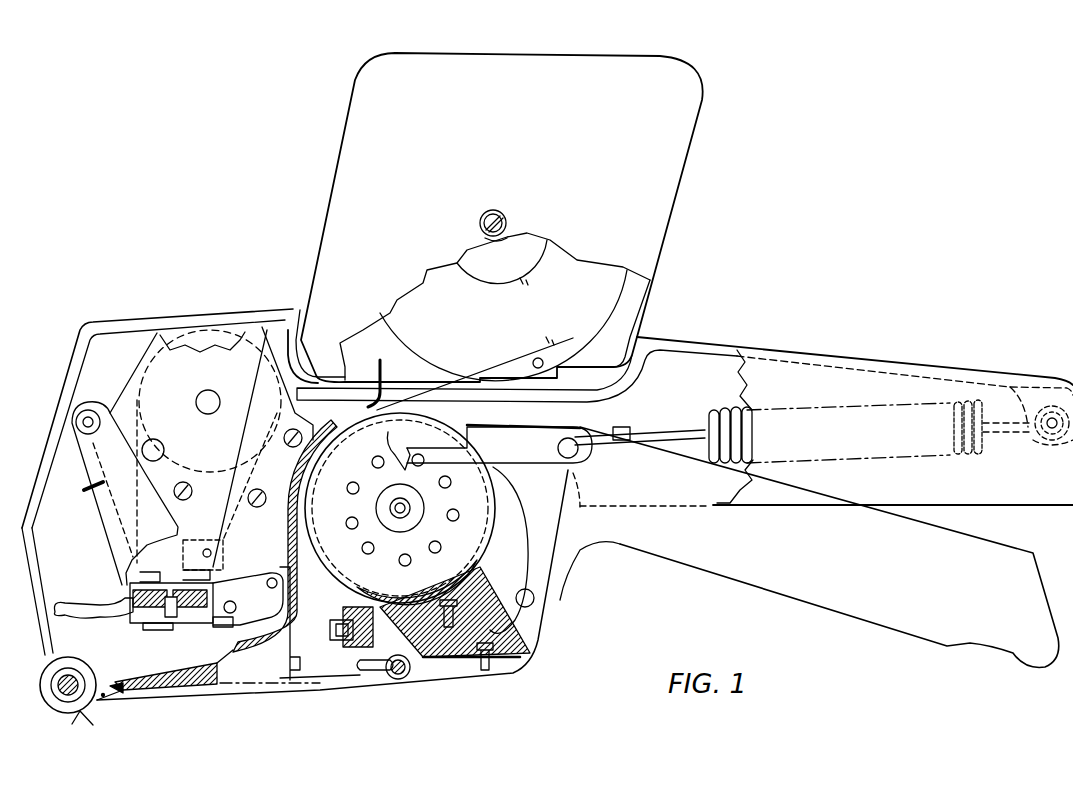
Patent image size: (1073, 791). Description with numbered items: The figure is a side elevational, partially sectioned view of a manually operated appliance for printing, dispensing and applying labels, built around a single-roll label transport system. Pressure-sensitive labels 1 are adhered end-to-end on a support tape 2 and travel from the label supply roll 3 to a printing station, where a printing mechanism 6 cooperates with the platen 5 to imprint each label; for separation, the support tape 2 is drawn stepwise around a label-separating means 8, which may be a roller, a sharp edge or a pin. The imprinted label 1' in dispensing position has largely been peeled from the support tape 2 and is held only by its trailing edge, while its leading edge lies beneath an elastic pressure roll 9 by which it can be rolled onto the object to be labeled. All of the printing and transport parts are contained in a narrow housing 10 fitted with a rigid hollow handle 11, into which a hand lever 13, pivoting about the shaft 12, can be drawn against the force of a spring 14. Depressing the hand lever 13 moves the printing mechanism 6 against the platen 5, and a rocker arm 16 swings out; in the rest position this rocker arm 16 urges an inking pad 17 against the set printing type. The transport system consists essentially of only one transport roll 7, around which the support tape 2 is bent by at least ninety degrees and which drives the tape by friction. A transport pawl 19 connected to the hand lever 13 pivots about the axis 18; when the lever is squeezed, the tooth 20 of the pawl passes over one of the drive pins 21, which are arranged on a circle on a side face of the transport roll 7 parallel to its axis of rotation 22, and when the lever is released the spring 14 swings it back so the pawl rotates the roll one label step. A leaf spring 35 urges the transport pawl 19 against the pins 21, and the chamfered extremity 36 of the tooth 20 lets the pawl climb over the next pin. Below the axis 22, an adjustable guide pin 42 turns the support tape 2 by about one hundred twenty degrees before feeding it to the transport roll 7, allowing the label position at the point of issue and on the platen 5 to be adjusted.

The pressure-sensitive labels 1 is at (131, 668).
The imprinted label 1' is at (88, 723).
The support tape 2 is at (318, 684).
The label supply roll 3 is at (585, 265).
The platen 5 is at (188, 684).
The printing mechanism 6 is at (160, 372).
The transport roll 7 is at (472, 527).
The label-separating means 8 is at (117, 686).
The elastic pressure roll 9 is at (62, 660).
The housing 10 is at (108, 321).
The handle 11 is at (910, 368).
The shaft 12 is at (536, 598).
The hand lever 13 is at (693, 565).
The spring 14 is at (728, 416).
The rocker arm 16 is at (98, 517).
The inking pad 17 is at (140, 593).
The axis 18 is at (578, 452).
The transport pawl 19 is at (525, 458).
The tooth 20 is at (403, 457).
The drive pins 21 is at (347, 520).
The axis of rotation 22 is at (398, 510).
The leaf spring 35 is at (580, 427).
The extremity 36 is at (387, 450).
The guide pin 42 is at (402, 672).